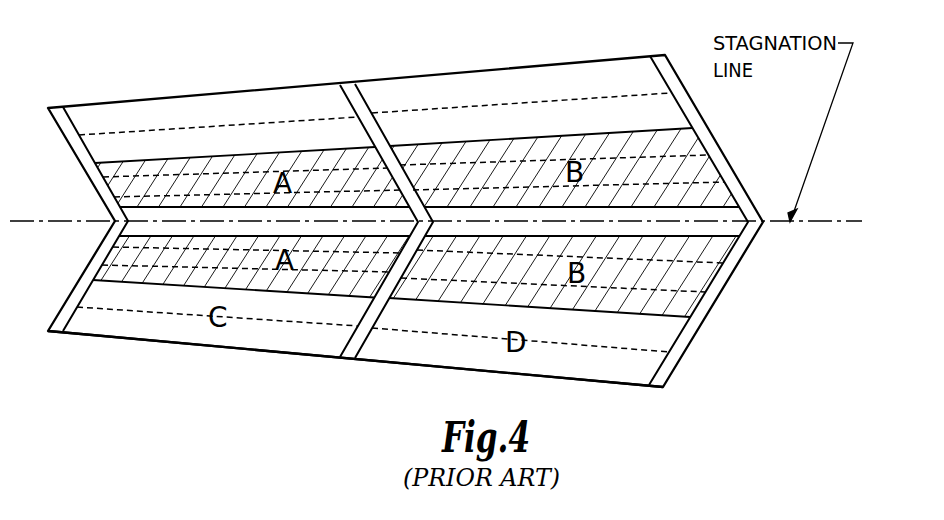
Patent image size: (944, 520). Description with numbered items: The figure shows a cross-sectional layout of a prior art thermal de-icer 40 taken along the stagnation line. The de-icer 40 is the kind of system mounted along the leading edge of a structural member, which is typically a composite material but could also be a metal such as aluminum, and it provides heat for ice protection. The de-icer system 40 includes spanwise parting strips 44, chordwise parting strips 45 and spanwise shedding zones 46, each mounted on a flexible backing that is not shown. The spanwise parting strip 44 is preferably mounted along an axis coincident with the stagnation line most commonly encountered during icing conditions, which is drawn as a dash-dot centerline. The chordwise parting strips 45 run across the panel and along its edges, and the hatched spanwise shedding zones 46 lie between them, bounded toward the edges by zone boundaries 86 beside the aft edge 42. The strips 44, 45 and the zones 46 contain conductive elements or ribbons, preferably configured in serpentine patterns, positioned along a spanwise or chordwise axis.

The de-icer 40 is at (173, 141).
The aft edge of deicer panel 42 is at (227, 353).
The spanwise parting strip 44 is at (133, 216).
The chordwise parting strips 45 is at (52, 333).
The spanwise shedding zones 46 is at (127, 191).
The heater zone boundaries 86 is at (267, 152).